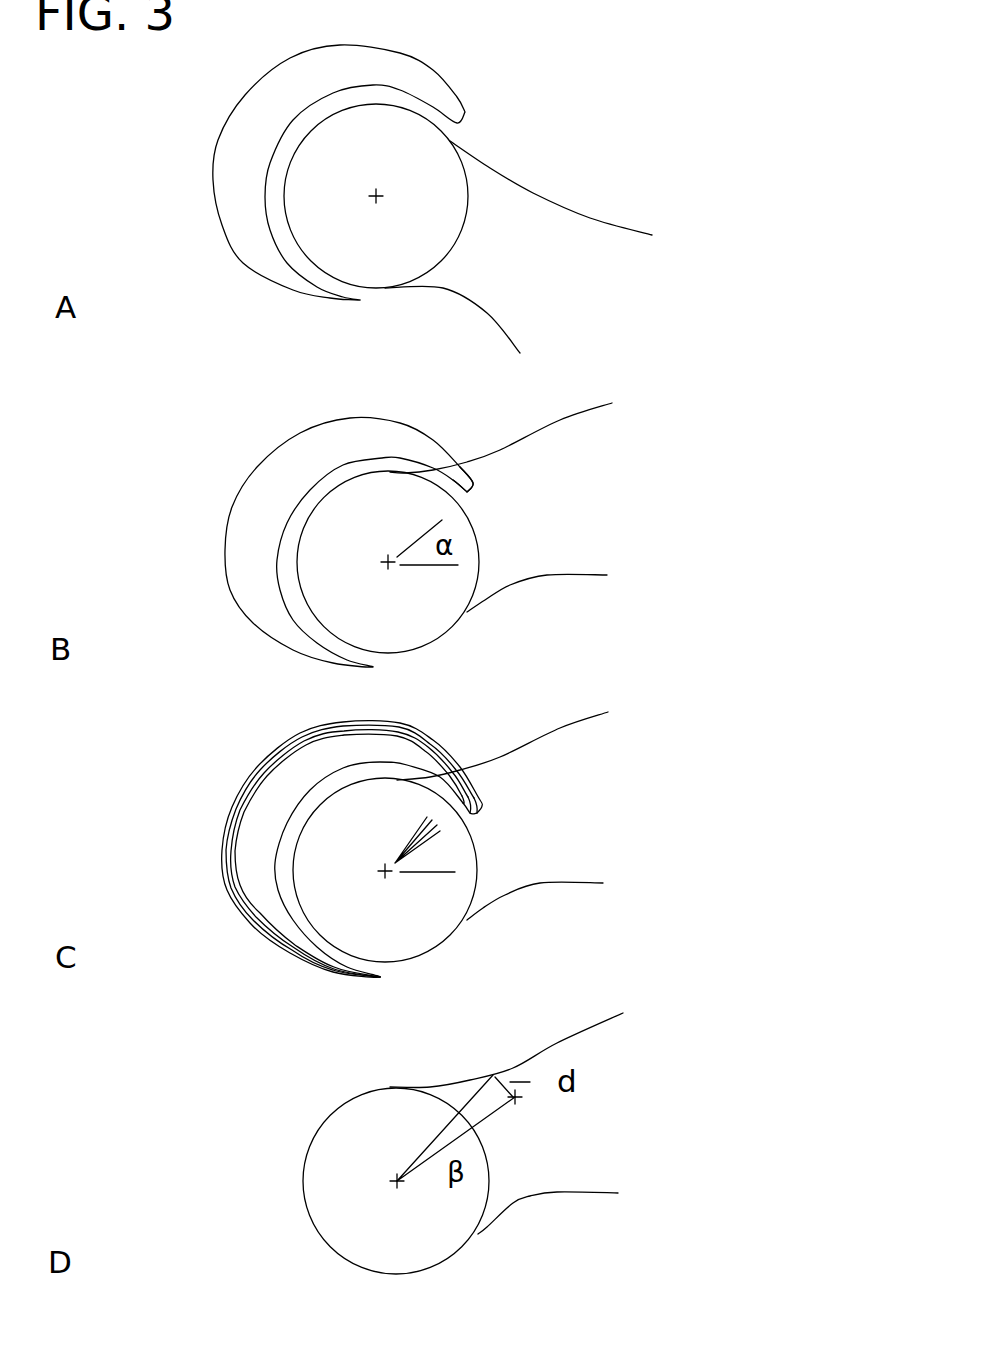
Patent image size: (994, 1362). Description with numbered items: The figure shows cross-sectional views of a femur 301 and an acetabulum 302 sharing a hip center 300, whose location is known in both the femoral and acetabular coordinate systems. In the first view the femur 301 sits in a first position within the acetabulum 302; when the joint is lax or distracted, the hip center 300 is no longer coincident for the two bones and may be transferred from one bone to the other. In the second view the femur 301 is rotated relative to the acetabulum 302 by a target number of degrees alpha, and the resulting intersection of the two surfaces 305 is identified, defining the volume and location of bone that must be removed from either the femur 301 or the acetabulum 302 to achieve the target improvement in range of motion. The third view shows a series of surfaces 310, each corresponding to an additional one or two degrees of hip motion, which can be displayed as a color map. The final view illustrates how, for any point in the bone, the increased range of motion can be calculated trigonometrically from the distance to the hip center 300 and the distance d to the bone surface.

In FIG. 3A, the hip center 300 is at (372, 203).
In FIG. 3A, the femur 301 is at (533, 193).
In FIG. 3B, the femur 301 is at (550, 575).
In FIG. 3C, the femur 301 is at (543, 883).
In FIG. 3D, the femur 301 is at (572, 1193).
In FIG. 3A, the acetabulum 302 is at (460, 92).
In FIG. 3B, the acetabulum 302 is at (248, 523).
In FIG. 3B, the intersection of the two surfaces 305 is at (460, 478).
In FIG. 3C, the series of surfaces 310 is at (483, 778).